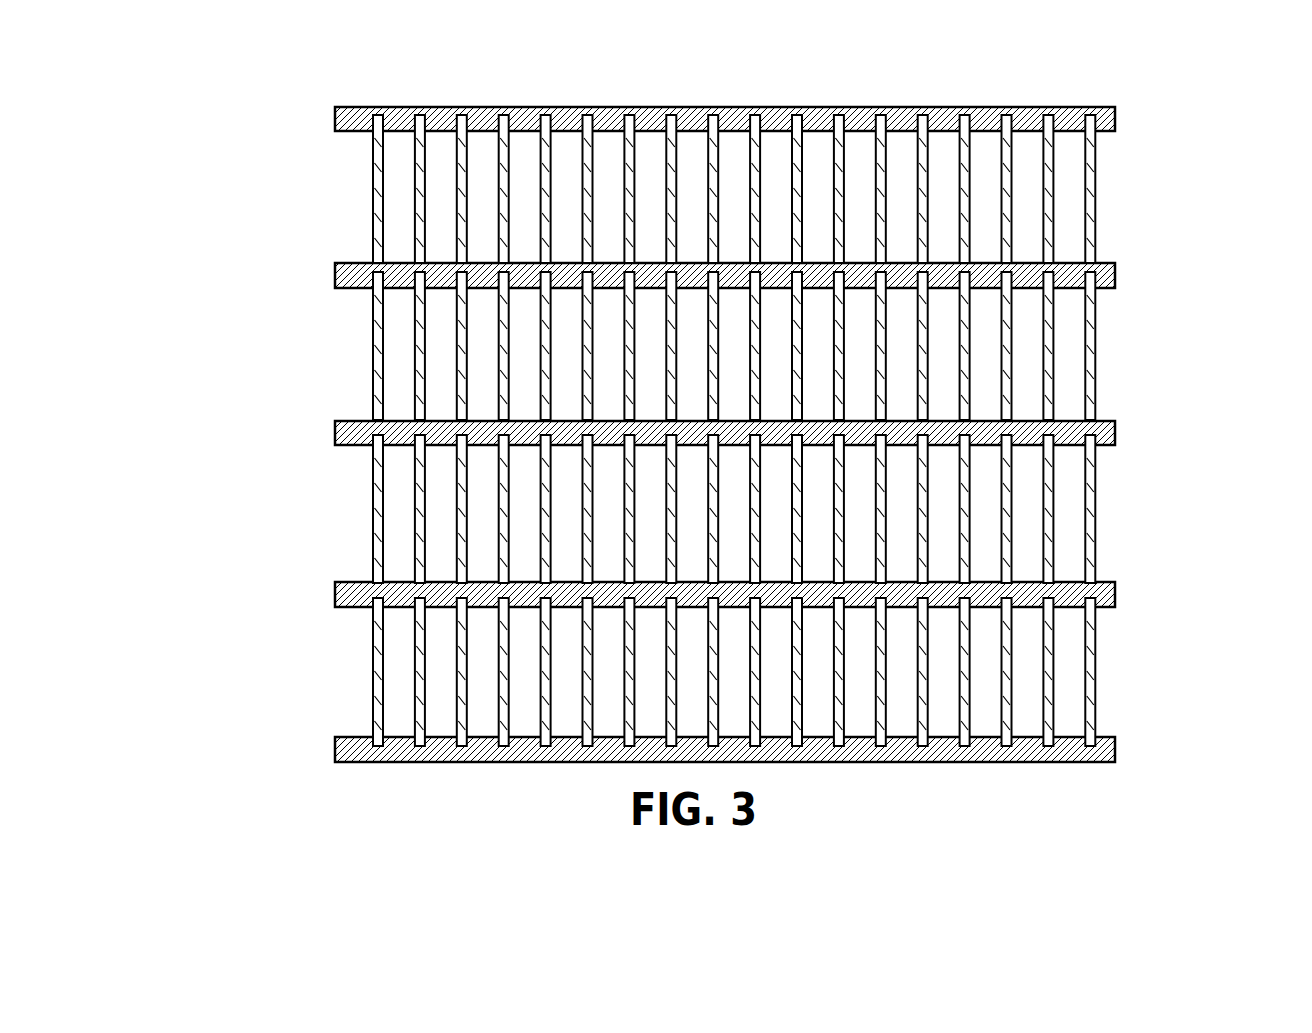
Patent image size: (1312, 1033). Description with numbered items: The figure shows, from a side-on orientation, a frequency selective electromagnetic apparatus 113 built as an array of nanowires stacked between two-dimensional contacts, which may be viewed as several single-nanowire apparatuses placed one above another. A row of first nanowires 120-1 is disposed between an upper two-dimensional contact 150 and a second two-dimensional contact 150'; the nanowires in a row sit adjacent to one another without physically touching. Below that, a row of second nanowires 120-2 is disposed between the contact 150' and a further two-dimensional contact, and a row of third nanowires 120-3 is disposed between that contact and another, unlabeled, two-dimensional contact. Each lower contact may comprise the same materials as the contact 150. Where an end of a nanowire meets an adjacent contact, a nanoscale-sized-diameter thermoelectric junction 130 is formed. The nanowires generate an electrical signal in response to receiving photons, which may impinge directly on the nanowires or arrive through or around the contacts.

The frequency selective electromagnetic apparatus 113 is at (730, 444).
The first nanowire 120-1 is at (677, 107).
The second nanowire 120-2 is at (757, 287).
The third nanowire 120-3 is at (756, 447).
The nanoscale-sized-diameter thermoelectric junction 130 is at (1100, 137).
The 2-dimensional contact 150 is at (725, 78).
The 2-dimensional contact 150' is at (803, 413).